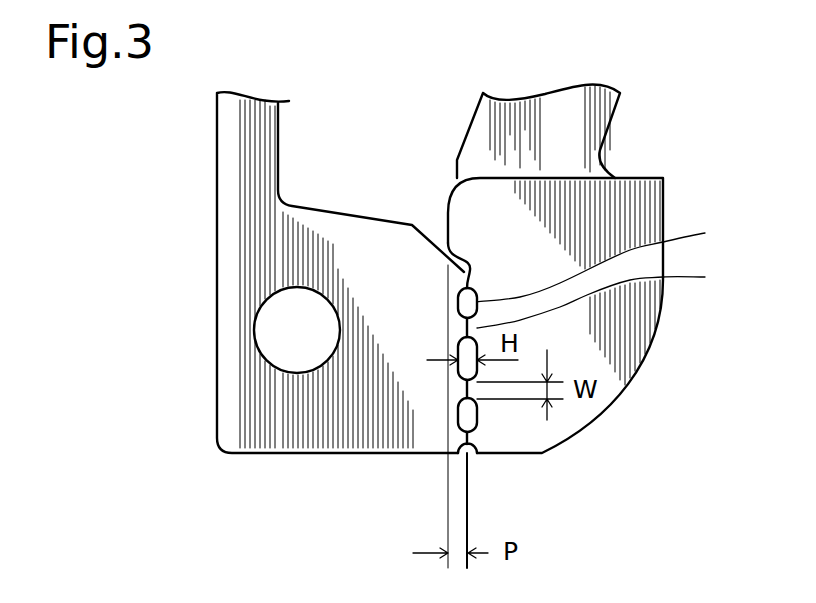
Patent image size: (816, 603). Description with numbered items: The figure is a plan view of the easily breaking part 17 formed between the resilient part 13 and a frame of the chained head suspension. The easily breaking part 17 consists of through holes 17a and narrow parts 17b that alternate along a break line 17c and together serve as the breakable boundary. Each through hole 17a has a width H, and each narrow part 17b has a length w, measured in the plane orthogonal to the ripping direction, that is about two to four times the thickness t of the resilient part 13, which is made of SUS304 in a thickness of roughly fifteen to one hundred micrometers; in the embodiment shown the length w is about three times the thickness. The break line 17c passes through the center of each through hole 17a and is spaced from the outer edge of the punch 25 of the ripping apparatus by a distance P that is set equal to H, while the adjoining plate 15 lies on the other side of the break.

The resilient part 13 is at (628, 318).
The plate member 15 is at (215, 212).
The easily breaking part 17 is at (705, 233).
The through hole 17a is at (473, 287).
The narrow part 17b is at (730, 277).
The break line 17c is at (468, 489).
The punch 25 is at (446, 222).